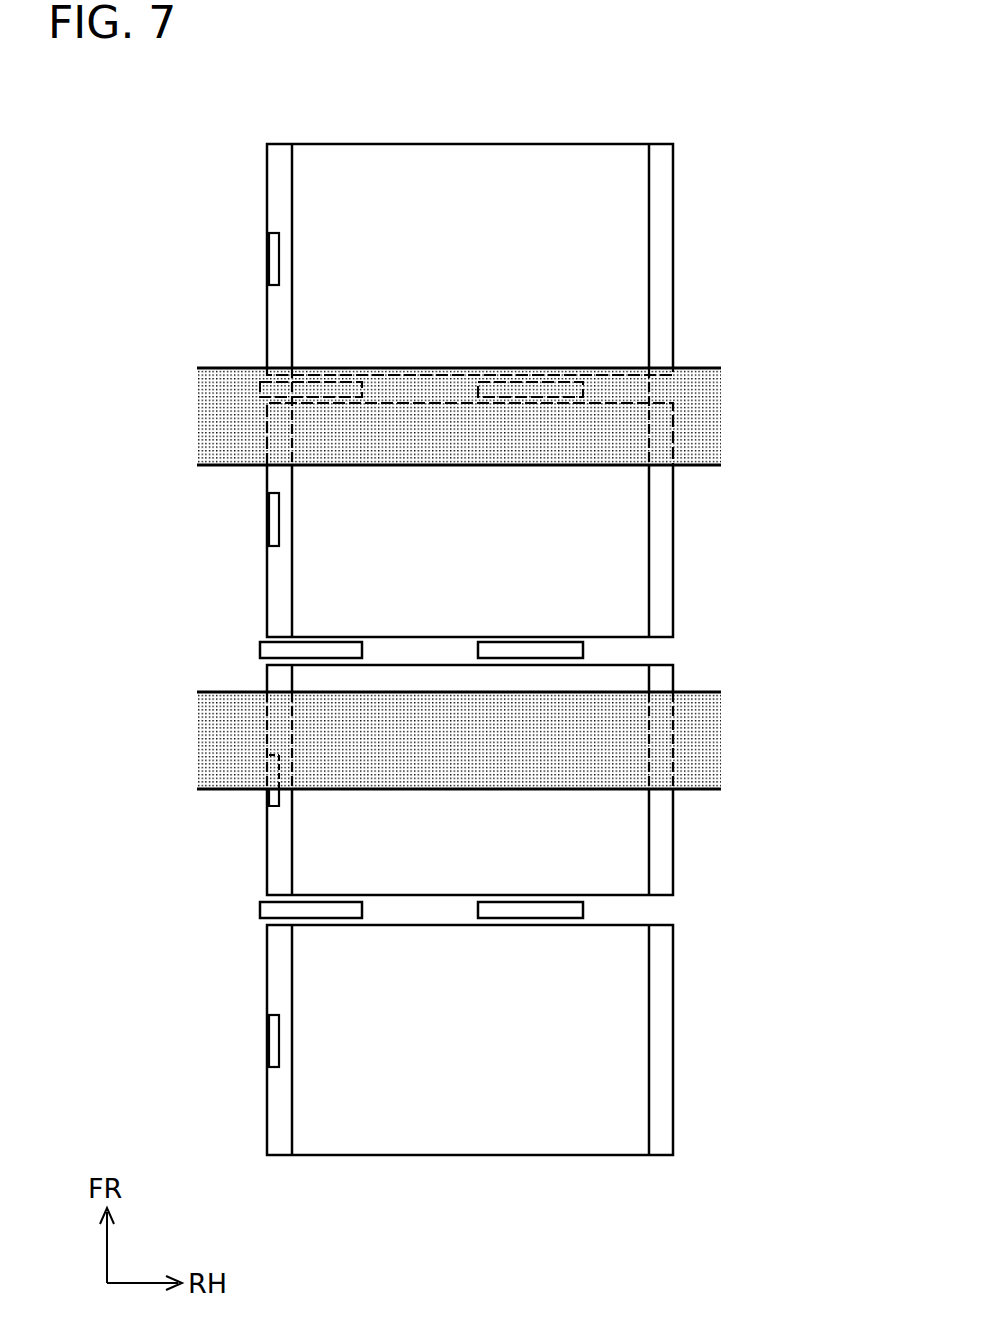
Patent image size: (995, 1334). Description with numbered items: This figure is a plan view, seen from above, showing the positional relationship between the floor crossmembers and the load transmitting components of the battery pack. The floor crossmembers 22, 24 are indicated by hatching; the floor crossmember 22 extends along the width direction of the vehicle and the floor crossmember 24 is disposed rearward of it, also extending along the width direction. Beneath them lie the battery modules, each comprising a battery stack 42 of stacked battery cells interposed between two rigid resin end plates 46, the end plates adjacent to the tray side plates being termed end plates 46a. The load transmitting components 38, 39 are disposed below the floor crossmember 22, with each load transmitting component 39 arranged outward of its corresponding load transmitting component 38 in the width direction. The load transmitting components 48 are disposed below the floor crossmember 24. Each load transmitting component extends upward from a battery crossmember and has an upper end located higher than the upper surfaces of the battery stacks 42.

The floor crossmember 22 is at (708, 413).
The floor crossmember 24 is at (708, 736).
The load transmitting component 38 is at (540, 388).
The load transmitting component 39 is at (325, 389).
The battery stack 42 is at (603, 190).
The end plate 46 is at (663, 248).
The end plate 46a is at (278, 166).
The load transmitting component 48 is at (273, 246).